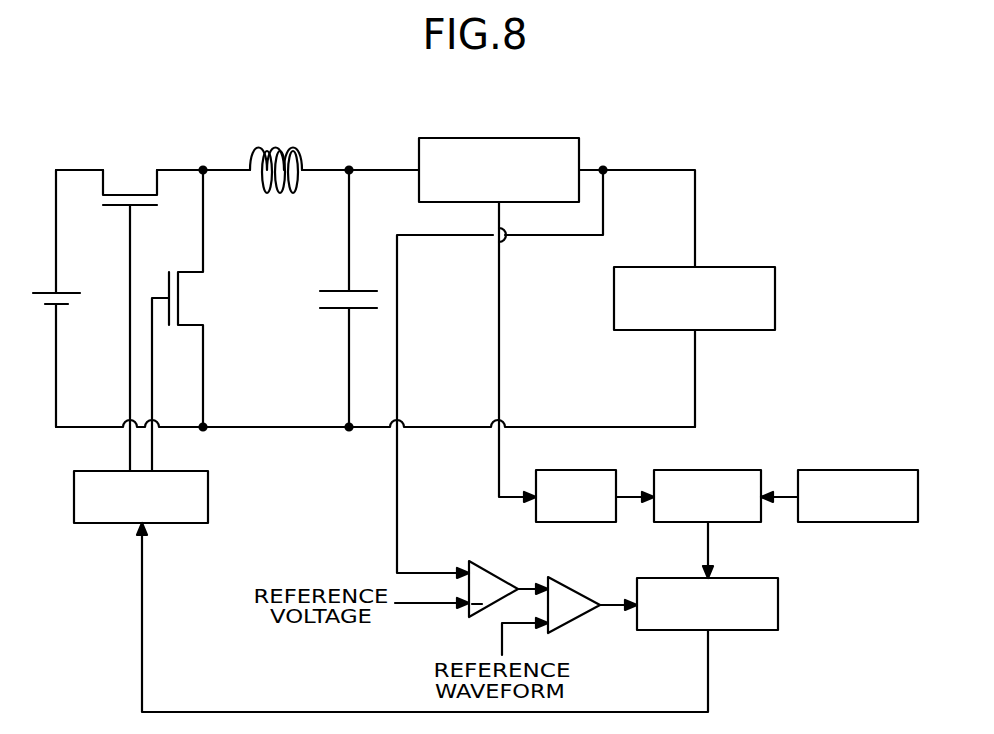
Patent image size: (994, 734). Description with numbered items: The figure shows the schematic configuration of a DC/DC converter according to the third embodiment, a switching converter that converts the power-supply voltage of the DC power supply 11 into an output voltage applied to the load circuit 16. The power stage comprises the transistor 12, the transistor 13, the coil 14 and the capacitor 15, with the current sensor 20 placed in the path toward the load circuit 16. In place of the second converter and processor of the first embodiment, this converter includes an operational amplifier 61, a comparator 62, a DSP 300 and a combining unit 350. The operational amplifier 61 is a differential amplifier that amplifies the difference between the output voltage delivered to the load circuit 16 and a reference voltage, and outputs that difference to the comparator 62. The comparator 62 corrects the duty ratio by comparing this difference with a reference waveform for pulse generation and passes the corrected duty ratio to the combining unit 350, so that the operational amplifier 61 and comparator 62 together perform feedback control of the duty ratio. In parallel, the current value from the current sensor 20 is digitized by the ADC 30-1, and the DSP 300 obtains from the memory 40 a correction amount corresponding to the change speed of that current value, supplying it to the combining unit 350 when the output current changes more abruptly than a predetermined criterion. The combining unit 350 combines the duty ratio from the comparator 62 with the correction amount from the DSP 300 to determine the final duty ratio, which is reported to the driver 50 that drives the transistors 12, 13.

The DC power supply 11 is at (70, 281).
The transistor 12 is at (130, 168).
The transistor 13 is at (206, 290).
The coil 14 is at (289, 135).
The capacitor 15 is at (334, 280).
The load circuit 16 is at (728, 267).
The current sensor 20 is at (500, 138).
The driver 50 is at (176, 471).
The ADC 30-1 is at (568, 470).
The DSP 300 is at (701, 470).
The memory 40 is at (860, 470).
The operational amplifier 61 is at (472, 562).
The comparator 62 is at (553, 578).
The combining unit 350 is at (721, 578).